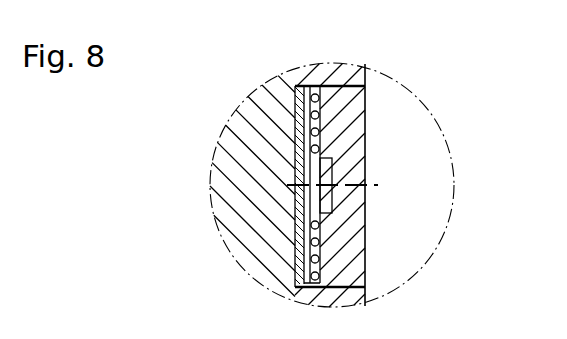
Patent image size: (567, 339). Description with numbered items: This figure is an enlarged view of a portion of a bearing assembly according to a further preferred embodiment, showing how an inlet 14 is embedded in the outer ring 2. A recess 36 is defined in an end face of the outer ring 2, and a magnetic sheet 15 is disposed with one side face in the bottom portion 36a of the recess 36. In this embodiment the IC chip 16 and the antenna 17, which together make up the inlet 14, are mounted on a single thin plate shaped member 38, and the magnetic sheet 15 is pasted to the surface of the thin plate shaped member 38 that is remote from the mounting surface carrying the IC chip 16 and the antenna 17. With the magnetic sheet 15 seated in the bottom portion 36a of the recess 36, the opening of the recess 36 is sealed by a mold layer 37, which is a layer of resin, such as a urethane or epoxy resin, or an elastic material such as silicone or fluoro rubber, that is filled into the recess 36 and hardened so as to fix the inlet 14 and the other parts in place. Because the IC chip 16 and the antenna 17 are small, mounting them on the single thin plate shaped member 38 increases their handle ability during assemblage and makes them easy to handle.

The outer ring 2 is at (233, 208).
The inlet 14 is at (427, 184).
The magnetic sheet 15 is at (300, 98).
The IC chip 16 is at (333, 194).
The antenna 17 is at (322, 128).
The recess 36 is at (360, 100).
The bottom portion 36a is at (300, 248).
The mold layer 37 is at (357, 118).
The thin plate shaped member 38 is at (309, 92).